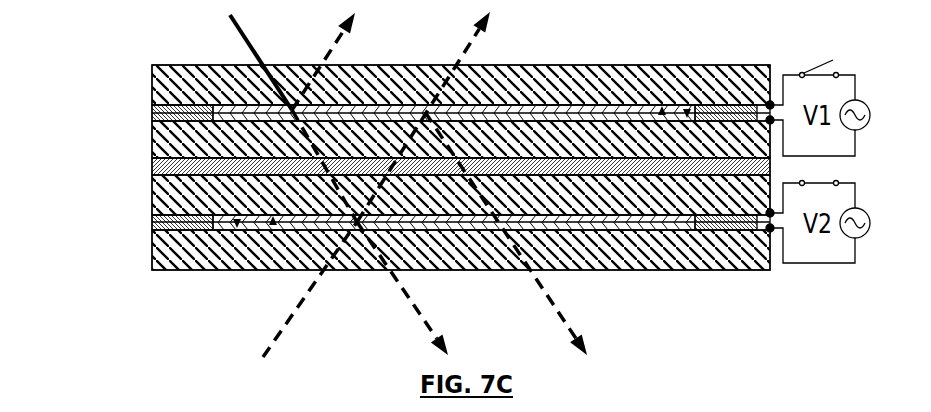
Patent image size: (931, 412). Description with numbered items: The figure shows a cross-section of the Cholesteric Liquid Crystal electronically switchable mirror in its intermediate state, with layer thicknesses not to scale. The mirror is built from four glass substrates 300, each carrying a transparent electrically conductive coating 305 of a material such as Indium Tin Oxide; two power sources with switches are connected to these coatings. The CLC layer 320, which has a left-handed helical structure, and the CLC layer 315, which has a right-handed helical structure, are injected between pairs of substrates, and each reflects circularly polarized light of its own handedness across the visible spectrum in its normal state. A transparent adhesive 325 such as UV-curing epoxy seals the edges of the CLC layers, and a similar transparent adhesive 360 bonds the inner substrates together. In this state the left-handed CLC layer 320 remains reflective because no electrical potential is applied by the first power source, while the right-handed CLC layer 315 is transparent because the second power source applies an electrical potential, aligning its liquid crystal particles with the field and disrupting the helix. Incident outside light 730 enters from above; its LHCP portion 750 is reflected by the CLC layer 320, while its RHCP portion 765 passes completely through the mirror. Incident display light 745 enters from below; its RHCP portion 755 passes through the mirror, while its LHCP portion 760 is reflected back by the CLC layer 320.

The glass substrate 300 is at (531, 96).
The transparent electrically conductive coating 305 is at (697, 103).
The CLC layer 315 is at (580, 250).
The CLC layer 320 is at (572, 102).
The transparent adhesive 325 is at (748, 102).
The transparent adhesive 360 is at (152, 168).
The incident outside light 730 is at (232, 30).
The incident display light 745 is at (262, 346).
The LHCP portion 750 is at (358, 31).
The RHCP portion 755 is at (493, 31).
The LHCP portion 760 is at (563, 347).
The RHCP portion 765 is at (424, 347).